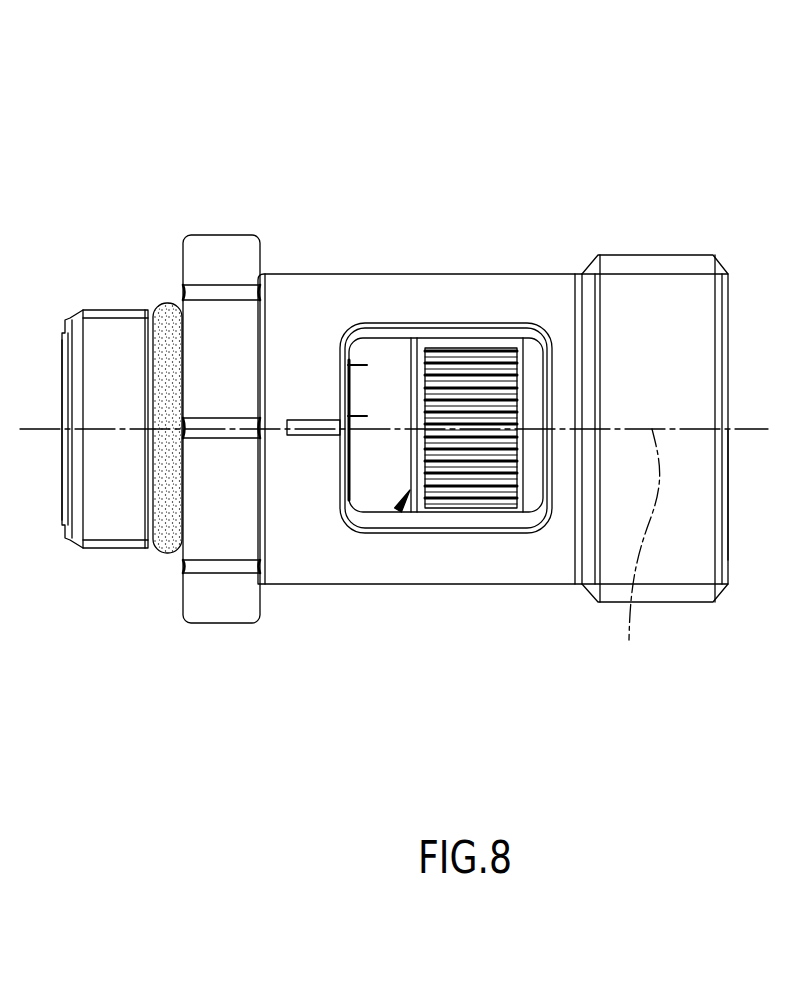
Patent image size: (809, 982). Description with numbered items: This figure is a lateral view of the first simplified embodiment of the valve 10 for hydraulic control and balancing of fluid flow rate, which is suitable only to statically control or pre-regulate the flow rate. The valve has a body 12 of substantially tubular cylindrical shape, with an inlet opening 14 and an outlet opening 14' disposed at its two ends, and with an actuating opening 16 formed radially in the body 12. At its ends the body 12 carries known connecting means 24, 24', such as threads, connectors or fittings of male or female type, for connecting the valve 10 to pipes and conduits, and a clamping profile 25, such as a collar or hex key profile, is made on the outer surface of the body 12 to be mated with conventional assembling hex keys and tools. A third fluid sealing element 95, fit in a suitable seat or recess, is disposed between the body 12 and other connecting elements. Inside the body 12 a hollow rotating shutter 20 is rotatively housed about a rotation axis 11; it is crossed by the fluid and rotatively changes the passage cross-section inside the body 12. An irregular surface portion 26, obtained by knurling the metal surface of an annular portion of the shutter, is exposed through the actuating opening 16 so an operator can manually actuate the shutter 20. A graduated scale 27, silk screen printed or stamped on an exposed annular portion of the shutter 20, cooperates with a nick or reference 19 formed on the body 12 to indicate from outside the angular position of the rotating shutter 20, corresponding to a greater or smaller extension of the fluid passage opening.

The valve for hydraulic control and balancing of fluid flow rate 10 is at (409, 363).
The body 12 is at (420, 425).
The connecting means 24 is at (655, 381).
The connecting means 24' is at (105, 377).
The clamping profile 25 is at (220, 235).
The graduated scale 27 is at (372, 323).
The actuating opening 16 is at (397, 385).
The outlet opening 14' is at (36, 456).
The third fluid sealing element 95 is at (163, 553).
The nick or reference 19 is at (298, 432).
The rotating shutter 20 is at (398, 510).
The irregular surface portion 26 is at (468, 492).
The rotation axis 11 is at (640, 552).
The inlet opening 14 is at (768, 528).